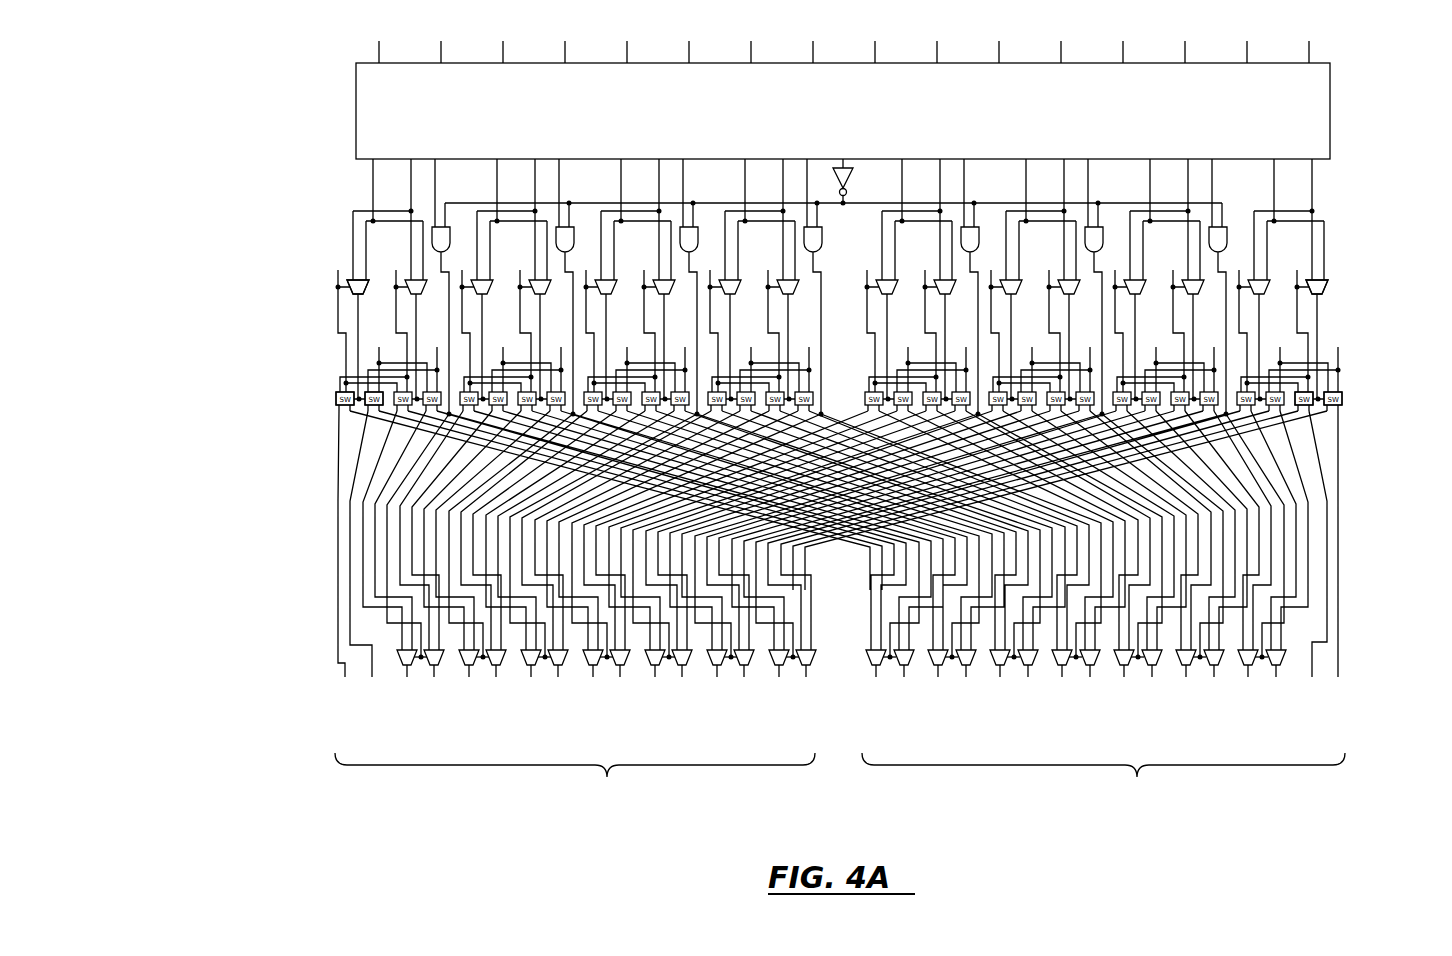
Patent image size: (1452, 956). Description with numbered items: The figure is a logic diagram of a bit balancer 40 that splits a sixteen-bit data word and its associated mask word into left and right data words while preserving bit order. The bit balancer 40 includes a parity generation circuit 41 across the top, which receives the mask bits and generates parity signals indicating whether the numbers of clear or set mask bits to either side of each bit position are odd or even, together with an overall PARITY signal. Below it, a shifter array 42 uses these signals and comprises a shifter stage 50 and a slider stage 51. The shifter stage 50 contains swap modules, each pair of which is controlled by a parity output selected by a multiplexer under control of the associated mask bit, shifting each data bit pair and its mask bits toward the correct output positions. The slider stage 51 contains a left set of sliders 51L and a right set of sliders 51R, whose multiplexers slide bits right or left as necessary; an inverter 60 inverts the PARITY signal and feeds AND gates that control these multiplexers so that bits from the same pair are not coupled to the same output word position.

The parity generation circuit 41 is at (843, 93).
The shifter array 42 is at (764, 265).
The inverter 60 is at (848, 180).
The shifter stage 50 is at (268, 352).
The bit balancer 40 is at (583, 862).
The slider stage 51 is at (268, 655).
The left set of sliders 51L is at (575, 731).
The right set of sliders 51R is at (1103, 731).